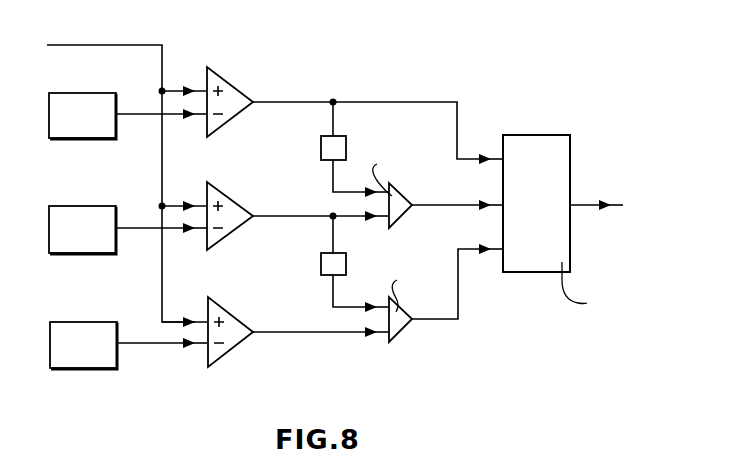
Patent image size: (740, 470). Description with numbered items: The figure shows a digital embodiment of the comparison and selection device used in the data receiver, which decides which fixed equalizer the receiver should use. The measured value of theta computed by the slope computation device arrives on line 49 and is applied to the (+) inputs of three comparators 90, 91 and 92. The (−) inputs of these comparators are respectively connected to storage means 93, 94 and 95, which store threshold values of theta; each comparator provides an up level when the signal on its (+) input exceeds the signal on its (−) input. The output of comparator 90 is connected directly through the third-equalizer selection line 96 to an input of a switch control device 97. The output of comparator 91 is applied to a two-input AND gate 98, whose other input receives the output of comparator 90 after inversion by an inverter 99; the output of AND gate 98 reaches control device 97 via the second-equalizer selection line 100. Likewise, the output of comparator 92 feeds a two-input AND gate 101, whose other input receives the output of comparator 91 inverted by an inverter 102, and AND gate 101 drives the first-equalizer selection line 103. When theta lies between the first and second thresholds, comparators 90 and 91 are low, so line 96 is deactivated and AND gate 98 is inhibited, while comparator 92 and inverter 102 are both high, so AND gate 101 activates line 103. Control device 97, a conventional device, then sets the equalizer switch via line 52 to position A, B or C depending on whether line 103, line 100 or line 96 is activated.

The line 49 is at (96, 45).
The comparator 90 is at (236, 96).
The comparator 91 is at (216, 190).
The comparator 92 is at (216, 303).
The storage means 93 is at (60, 139).
The storage means 94 is at (64, 254).
The storage means 95 is at (64, 369).
The equalizer EQZ 3 selection line 96 is at (421, 103).
The switch control device 97 is at (512, 272).
The two-input AND gate 98 is at (392, 186).
The inverter 99 is at (321, 150).
The equalizer EQZ 2 selection line 100 is at (452, 206).
The two-input AND gate 101 is at (401, 340).
The inverter 102 is at (321, 265).
The equalizer EQZ 1 selection line 103 is at (435, 319).
The line 52 is at (574, 203).